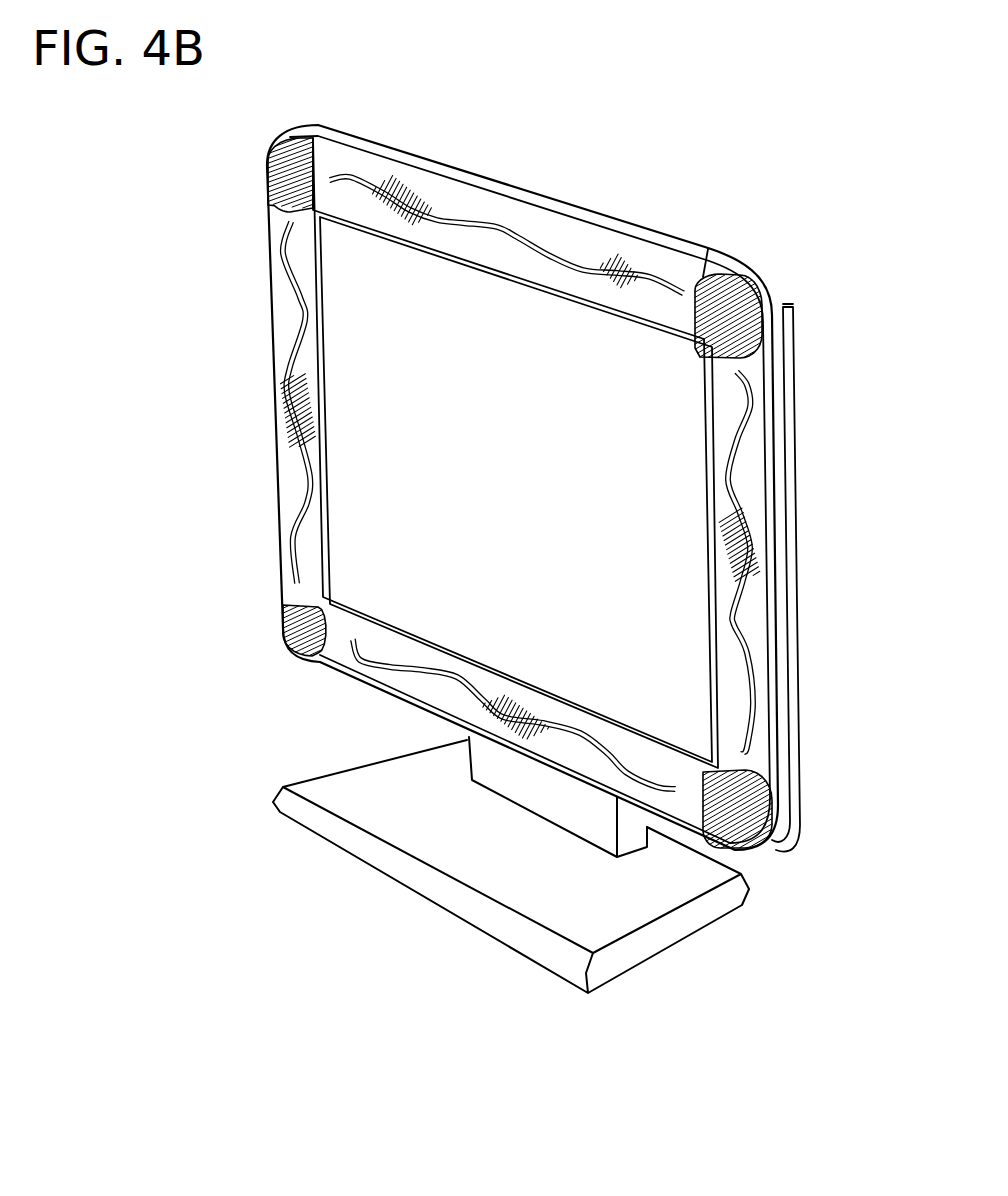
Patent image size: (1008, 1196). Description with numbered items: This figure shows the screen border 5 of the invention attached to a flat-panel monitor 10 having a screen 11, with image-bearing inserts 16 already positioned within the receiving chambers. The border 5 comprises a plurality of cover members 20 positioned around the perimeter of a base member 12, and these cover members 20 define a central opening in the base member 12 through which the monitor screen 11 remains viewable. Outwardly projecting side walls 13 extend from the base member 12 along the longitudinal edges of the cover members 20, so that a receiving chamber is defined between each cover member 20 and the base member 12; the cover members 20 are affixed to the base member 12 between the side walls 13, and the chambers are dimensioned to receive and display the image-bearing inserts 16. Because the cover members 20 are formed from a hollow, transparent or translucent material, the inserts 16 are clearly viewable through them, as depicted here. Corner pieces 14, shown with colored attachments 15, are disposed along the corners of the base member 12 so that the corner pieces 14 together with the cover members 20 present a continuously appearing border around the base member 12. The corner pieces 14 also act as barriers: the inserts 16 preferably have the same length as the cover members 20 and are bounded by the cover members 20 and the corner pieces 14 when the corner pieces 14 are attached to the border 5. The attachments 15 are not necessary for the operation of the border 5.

The screen border 5 is at (231, 259).
The monitor 10 is at (800, 530).
The screen 11 is at (375, 537).
The base member 12 is at (777, 425).
The side walls 13 is at (613, 228).
The corner pieces 14 is at (773, 287).
The colored attachments 15 is at (755, 815).
The image-bearing inserts 16 is at (490, 228).
The cover members 20 is at (455, 203).